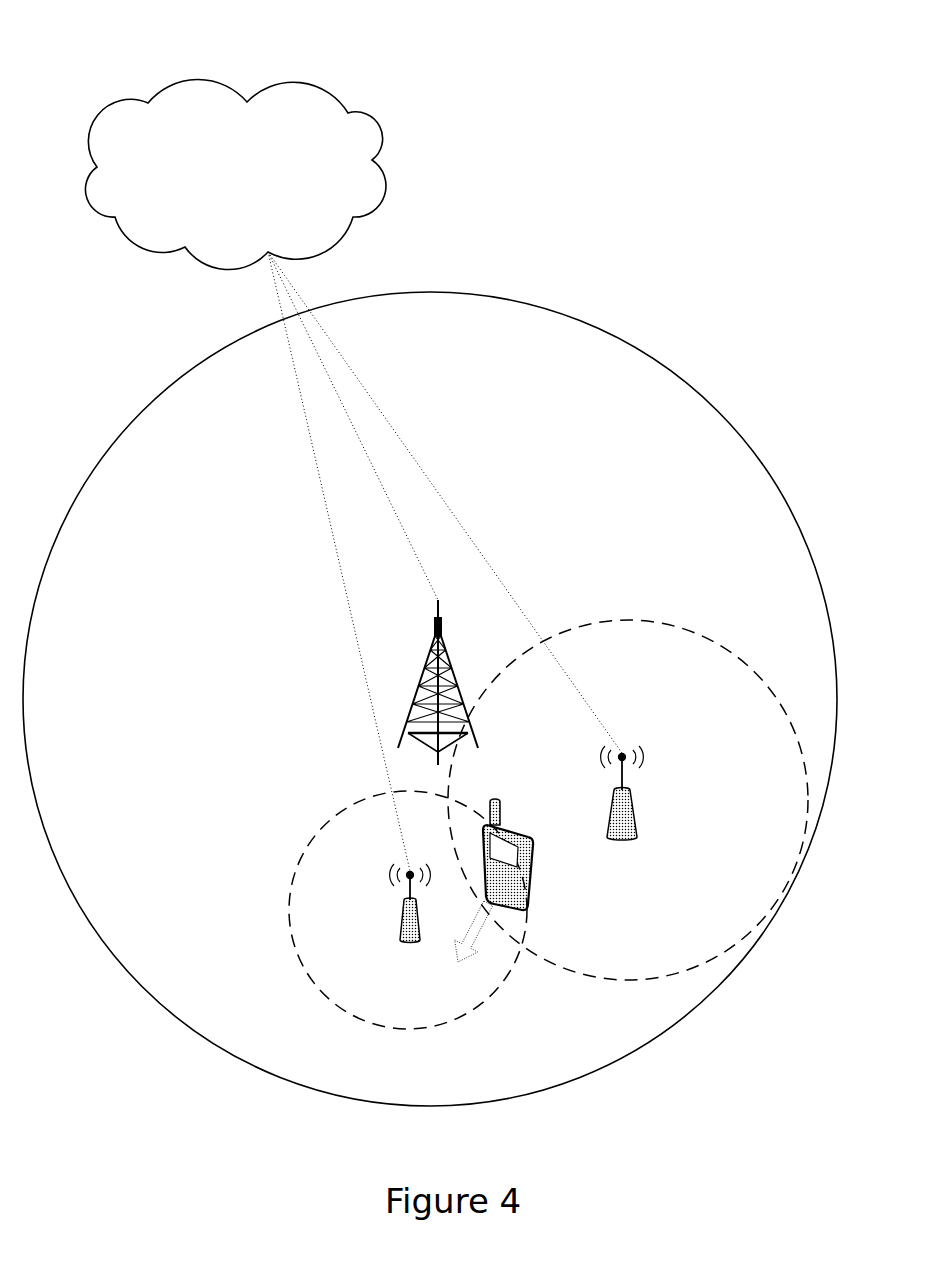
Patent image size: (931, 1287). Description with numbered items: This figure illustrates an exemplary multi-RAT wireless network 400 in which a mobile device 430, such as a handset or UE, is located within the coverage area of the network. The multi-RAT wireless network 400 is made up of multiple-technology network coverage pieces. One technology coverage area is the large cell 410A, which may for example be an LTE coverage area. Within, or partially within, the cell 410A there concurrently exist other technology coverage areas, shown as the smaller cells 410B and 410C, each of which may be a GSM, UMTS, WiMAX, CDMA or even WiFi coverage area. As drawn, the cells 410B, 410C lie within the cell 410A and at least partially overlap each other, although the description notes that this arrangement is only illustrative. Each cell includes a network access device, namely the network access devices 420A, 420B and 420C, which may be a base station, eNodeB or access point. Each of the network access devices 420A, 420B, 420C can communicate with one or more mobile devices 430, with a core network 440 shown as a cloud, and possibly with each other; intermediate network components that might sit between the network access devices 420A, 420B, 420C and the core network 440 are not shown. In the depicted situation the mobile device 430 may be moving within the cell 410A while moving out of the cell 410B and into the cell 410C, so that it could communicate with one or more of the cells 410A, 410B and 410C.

The multi-RAT wireless network 400 is at (716, 103).
The cell 410A is at (452, 332).
The cell 410B is at (650, 657).
The cell 410C is at (432, 1019).
The network access device 420A is at (449, 660).
The network access device 420B is at (630, 790).
The network access device 420C is at (400, 922).
The mobile device 430 is at (528, 900).
The core network 440 is at (250, 184).